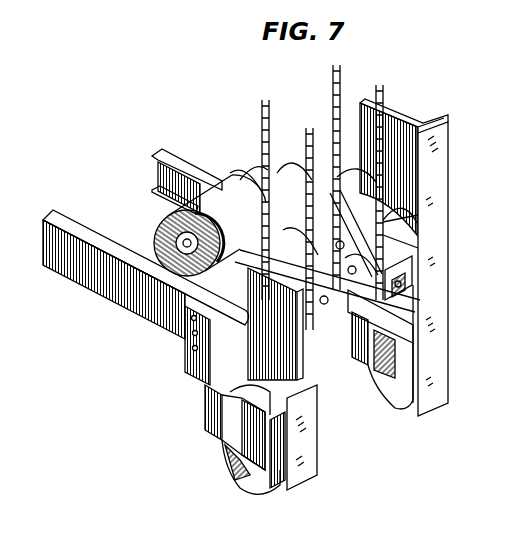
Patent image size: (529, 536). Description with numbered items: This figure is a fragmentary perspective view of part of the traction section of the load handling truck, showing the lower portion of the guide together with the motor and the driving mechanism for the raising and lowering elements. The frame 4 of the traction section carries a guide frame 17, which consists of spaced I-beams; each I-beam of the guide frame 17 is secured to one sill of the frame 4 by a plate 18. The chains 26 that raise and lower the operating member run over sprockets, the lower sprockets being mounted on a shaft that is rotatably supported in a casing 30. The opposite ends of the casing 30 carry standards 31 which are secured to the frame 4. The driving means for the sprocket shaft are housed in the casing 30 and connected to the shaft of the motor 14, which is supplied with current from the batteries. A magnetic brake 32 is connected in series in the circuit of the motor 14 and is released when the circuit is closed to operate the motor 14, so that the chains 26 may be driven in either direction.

The frame 4 is at (196, 176).
The motor 14 is at (163, 222).
The guide frame 17 is at (441, 146).
The plate 18 is at (193, 350).
The chain 26 is at (262, 108).
The casing 30 is at (402, 229).
The standard 31 is at (410, 282).
The magnetic brake 32 is at (298, 152).